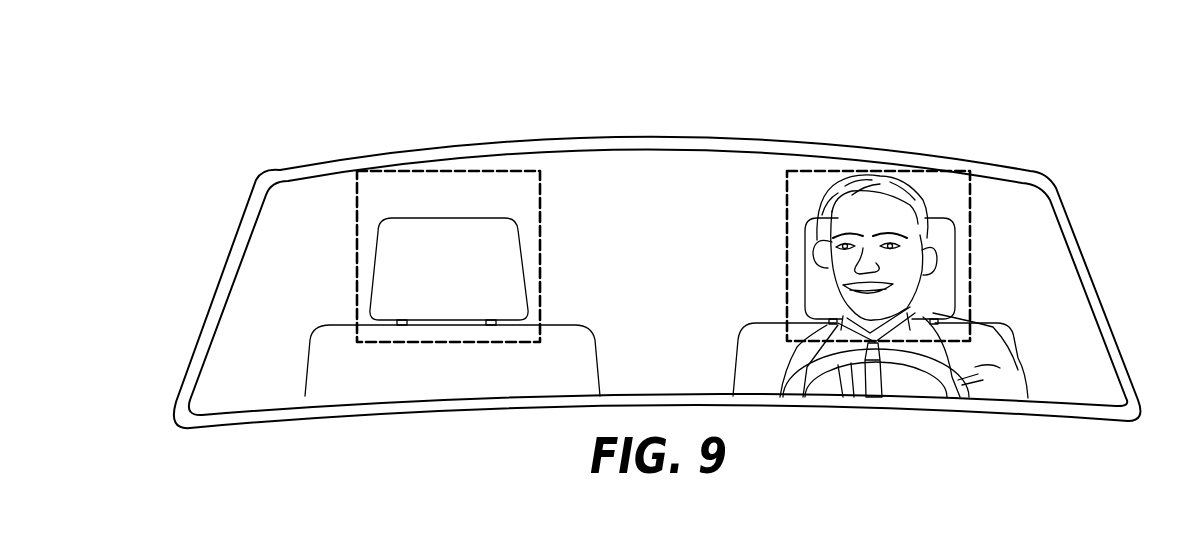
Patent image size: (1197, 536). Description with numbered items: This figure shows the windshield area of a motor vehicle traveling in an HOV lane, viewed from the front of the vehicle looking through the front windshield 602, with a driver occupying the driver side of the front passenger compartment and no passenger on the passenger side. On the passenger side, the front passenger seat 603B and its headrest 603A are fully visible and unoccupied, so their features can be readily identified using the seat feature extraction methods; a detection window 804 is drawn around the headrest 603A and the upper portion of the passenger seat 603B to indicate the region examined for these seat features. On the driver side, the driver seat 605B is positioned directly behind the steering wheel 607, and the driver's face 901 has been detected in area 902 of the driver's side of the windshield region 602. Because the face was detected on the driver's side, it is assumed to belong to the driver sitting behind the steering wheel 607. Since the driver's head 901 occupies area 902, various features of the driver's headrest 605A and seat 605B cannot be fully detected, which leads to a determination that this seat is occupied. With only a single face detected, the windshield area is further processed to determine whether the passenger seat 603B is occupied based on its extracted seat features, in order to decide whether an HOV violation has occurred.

The front windshield 602 is at (308, 221).
The headrest 603A is at (518, 220).
The front passenger seat 603B is at (563, 323).
The headrest 605A is at (957, 262).
The driver seat 605B is at (768, 323).
The steering wheel 607 is at (950, 387).
The passenger seat detection window 804 is at (507, 168).
The driver's face 901 is at (827, 187).
The area 902 is at (783, 197).